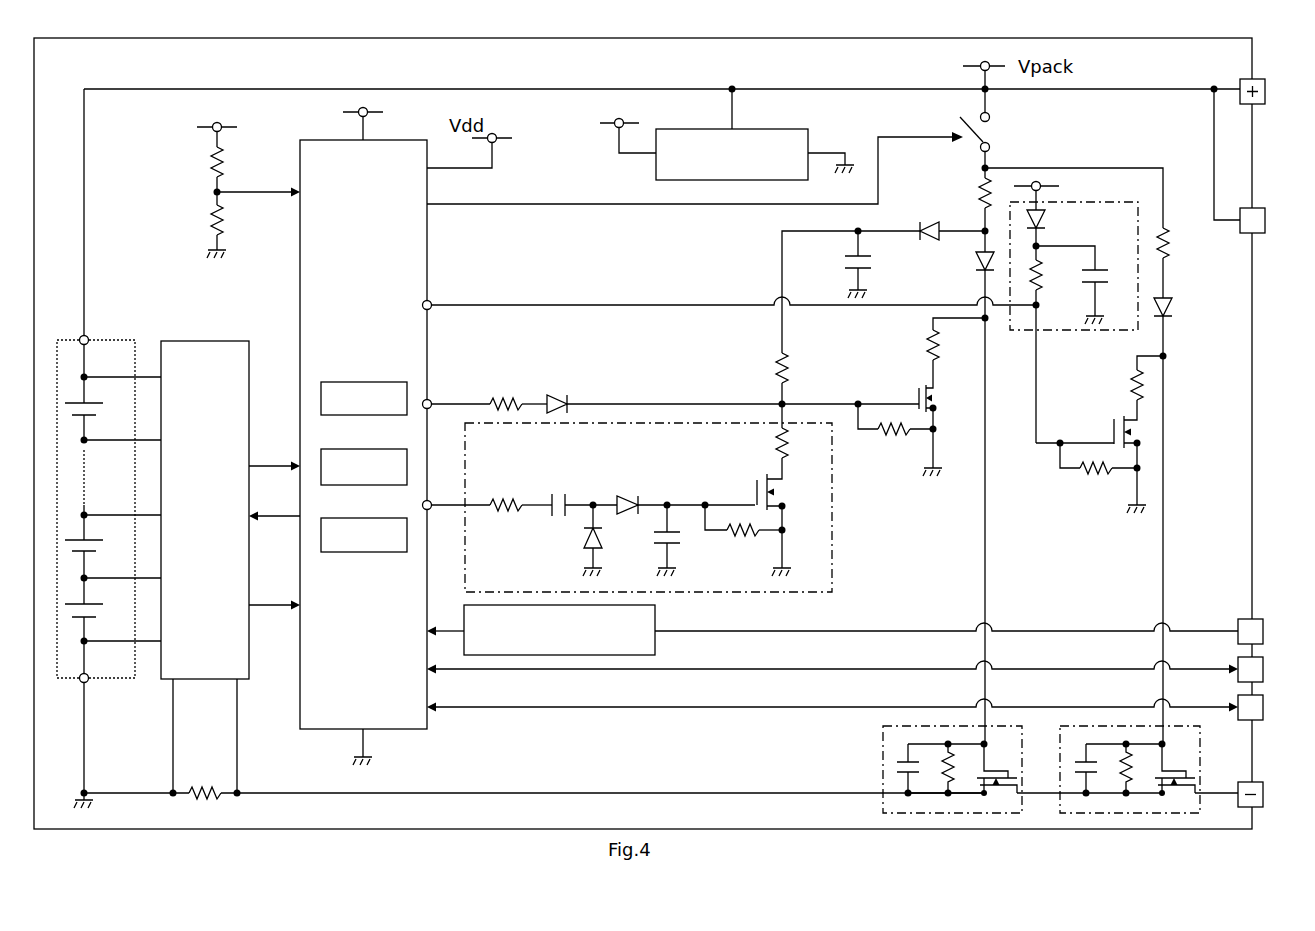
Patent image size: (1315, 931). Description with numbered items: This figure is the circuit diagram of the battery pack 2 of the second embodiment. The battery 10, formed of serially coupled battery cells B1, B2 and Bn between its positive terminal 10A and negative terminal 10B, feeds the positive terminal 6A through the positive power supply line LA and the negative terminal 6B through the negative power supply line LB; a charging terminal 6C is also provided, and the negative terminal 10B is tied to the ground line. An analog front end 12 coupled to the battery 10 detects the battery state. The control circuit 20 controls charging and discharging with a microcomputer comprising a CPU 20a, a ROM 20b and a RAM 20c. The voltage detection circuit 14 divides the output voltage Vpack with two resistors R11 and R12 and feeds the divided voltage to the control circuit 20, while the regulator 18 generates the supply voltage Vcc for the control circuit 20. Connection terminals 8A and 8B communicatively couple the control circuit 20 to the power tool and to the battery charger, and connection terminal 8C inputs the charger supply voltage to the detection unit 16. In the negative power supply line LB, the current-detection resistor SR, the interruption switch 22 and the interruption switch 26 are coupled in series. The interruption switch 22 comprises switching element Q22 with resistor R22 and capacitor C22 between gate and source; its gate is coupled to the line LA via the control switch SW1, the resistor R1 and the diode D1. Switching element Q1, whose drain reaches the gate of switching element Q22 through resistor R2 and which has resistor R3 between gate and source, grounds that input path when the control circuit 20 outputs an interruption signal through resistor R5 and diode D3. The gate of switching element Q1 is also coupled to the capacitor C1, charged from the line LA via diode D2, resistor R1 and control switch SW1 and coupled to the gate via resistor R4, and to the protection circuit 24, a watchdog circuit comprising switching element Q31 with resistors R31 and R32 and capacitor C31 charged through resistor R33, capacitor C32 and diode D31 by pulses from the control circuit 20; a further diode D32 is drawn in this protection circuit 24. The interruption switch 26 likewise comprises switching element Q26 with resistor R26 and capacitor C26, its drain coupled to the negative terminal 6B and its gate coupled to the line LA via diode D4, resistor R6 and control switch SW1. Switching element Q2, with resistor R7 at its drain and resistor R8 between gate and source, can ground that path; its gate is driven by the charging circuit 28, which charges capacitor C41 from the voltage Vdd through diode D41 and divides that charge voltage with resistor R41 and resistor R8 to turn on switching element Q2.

The battery pack 2 is at (84, 76).
The positive terminal 6A is at (1269, 91).
The negative terminal 6B is at (1268, 794).
The charging terminal 6C is at (1269, 220).
The connection terminal 8A is at (1268, 707).
The connection terminal 8B is at (1268, 669).
The connection terminal 8C is at (1268, 631).
The battery 10 is at (103, 494).
The positive terminal of battery 10A is at (88, 336).
The negative terminal of battery 10B is at (88, 682).
The analog front end 12 is at (210, 341).
The voltage detection circuit 14 is at (229, 177).
The detection unit 16 is at (655, 645).
The regulator 18 is at (775, 129).
The control circuit 20 is at (361, 427).
The CPU 20a is at (355, 382).
The ROM 20b is at (355, 449).
The RAM 20c is at (355, 518).
The interruption switch 22 is at (943, 766).
The protection circuit 24 is at (655, 507).
The interruption switch 26 is at (1119, 766).
The charging circuit 28 is at (1067, 309).
The positive power supply line LA is at (655, 91).
The negative power supply line LB is at (627, 793).
The control switch SW1 is at (998, 133).
The resistor for current detection SR is at (205, 779).
The resistor R1 is at (969, 189).
The resistor R2 is at (948, 345).
The resistor R3 is at (894, 441).
The resistor R4 is at (797, 368).
The resistor R5 is at (506, 390).
The resistor R6 is at (1179, 243).
The resistor R7 is at (1119, 380).
The resistor R8 is at (1096, 481).
The resistor R11 is at (236, 162).
The resistor R12 is at (236, 220).
The resistor R22 is at (951, 783).
The resistor R26 is at (1129, 783).
The resistor R31 is at (801, 443).
The resistor R32 is at (741, 542).
The resistor R33 is at (504, 492).
The resistor R41 is at (1055, 283).
The capacitor C1 is at (874, 263).
The capacitor C22 is at (906, 783).
The capacitor C26 is at (1084, 783).
The capacitor C31 is at (681, 540).
The capacitor C32 is at (555, 494).
The capacitor C41 is at (1084, 285).
The diode D1 is at (966, 264).
The diode D2 is at (926, 218).
The diode D3 is at (558, 392).
The diode D4 is at (1178, 311).
The diode D31 is at (626, 493).
The diode D32 is at (573, 540).
The diode D41 is at (1058, 219).
The switching element Q1 is at (897, 394).
The switching element Q2 is at (1088, 434).
The switching element Q22 is at (1005, 770).
The switching element Q26 is at (1183, 770).
The switching element Q31 is at (752, 517).
The battery cell Bn is at (94, 420).
The battery cell B2 is at (94, 556).
The battery cell B1 is at (94, 620).